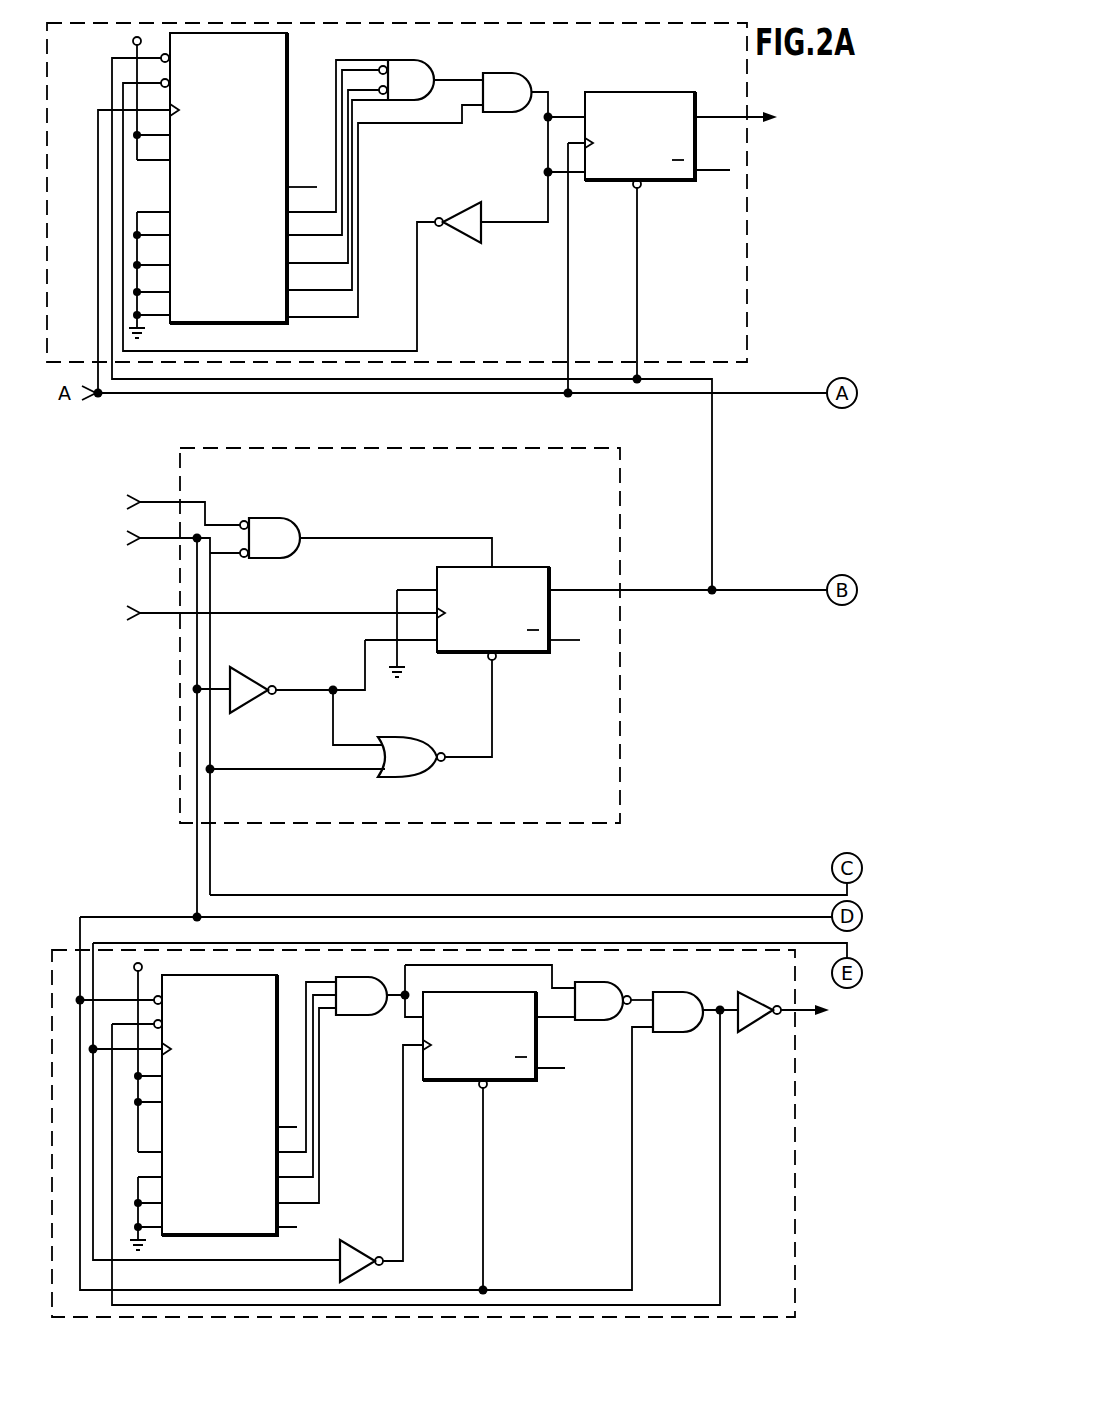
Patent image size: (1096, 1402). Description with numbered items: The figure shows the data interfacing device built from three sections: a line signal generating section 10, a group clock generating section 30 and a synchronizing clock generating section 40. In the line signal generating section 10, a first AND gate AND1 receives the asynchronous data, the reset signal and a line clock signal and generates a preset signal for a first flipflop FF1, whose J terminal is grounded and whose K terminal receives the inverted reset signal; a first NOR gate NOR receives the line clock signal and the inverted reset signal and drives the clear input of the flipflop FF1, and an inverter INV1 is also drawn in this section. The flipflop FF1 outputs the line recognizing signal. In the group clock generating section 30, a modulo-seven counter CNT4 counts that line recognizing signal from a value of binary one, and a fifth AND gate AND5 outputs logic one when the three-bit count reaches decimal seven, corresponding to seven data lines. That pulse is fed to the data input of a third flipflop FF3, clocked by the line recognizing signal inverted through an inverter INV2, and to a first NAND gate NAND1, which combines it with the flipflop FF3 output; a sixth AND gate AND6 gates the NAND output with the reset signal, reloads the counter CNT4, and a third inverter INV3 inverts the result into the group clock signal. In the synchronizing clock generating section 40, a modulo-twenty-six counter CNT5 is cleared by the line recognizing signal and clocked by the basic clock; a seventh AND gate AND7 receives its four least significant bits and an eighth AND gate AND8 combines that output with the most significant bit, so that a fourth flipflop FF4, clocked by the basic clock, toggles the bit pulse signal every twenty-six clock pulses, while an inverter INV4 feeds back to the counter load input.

The line signal generating section 10 is at (252, 447).
The group clock generating section 30 is at (797, 1243).
The synchronizing clock generating section 40 is at (747, 272).
The modulo-26 counter CNT5 is at (288, 78).
The seventh AND gate AND7 is at (443, 52).
The eighth AND gate AND8 is at (538, 65).
The fourth flipflop FF4 is at (633, 92).
The inverter INV4 is at (460, 244).
The first AND gate AND1 is at (274, 519).
The first flipflop FF1 is at (550, 542).
The inverter INV1 is at (235, 713).
The first NOR gate NOR is at (400, 780).
The modulo-7 counter CNT4 is at (277, 1097).
The fifth AND gate AND5 is at (385, 1015).
The third flipflop FF3 is at (504, 1082).
The first NAND gate NAND1 is at (591, 962).
The sixth AND gate AND6 is at (715, 988).
The third inverter INV3 is at (760, 1026).
The inverter INV2 is at (393, 1220).